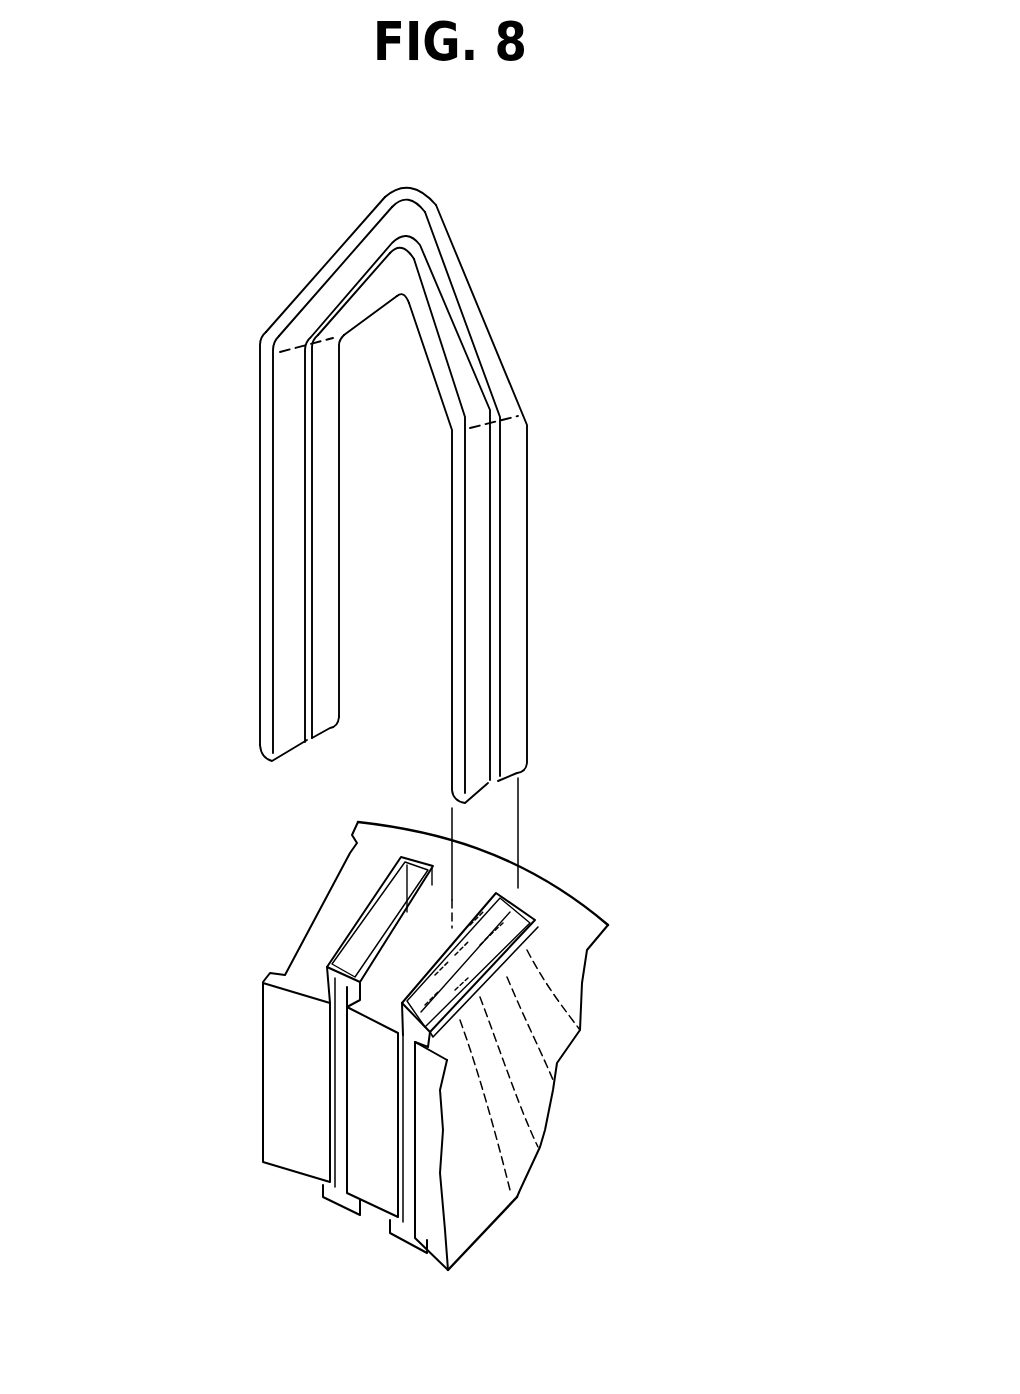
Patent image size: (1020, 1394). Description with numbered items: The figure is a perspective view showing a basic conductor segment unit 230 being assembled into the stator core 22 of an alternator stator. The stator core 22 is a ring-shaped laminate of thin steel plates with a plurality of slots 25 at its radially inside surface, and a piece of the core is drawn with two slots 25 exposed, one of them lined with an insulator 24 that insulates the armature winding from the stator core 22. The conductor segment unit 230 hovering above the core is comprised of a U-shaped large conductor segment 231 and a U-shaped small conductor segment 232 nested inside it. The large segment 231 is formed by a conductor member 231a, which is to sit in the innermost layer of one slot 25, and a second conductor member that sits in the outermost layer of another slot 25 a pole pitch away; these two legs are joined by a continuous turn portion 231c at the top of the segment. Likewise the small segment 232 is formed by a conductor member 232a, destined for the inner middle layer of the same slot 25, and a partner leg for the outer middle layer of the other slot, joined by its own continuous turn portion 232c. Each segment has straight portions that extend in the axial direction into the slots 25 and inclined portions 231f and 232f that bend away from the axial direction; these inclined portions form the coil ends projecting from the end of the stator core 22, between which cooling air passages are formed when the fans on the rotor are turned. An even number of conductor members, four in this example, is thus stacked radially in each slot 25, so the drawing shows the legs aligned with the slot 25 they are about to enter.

The stator core 22 is at (580, 917).
The insulator 24 is at (530, 890).
The slot 25 is at (342, 1083).
The basic conductor segment unit 230 is at (563, 317).
The large conductor segment 231 is at (467, 293).
The conductor member 231a is at (518, 1197).
The continuous turn portion 231c is at (420, 198).
The inclined portion 231f is at (347, 275).
The small conductor segment 232 is at (478, 400).
The conductor member 232a is at (547, 1152).
The continuous turn portion 232c is at (410, 257).
The inclined portion 232f is at (343, 317).